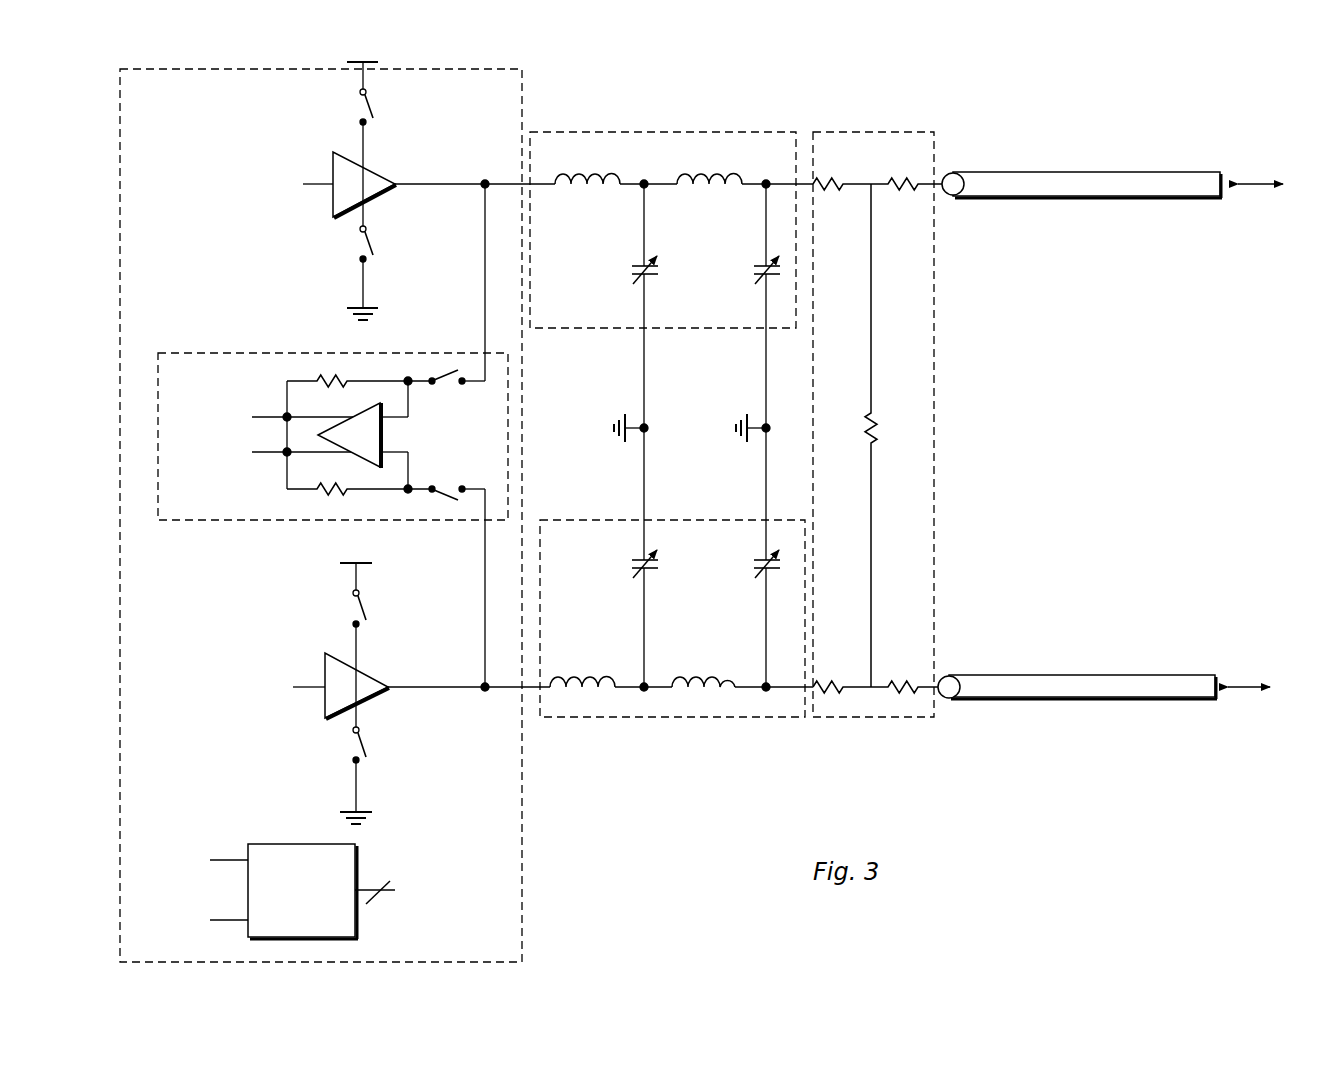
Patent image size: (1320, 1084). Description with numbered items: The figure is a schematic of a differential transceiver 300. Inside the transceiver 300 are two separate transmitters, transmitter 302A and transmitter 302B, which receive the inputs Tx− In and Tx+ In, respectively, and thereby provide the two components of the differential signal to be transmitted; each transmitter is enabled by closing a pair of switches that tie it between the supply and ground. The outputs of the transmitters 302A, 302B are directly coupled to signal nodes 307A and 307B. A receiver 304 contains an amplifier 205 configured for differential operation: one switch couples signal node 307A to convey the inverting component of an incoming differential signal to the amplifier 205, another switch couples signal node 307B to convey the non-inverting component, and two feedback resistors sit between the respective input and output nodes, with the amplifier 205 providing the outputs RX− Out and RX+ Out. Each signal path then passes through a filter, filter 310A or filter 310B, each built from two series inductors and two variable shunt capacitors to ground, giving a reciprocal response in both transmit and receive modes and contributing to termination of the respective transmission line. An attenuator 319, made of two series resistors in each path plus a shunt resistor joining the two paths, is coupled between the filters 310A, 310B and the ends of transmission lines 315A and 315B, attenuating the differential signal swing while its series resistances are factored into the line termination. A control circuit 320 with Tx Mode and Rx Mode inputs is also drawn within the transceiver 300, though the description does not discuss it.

The transceiver 300 is at (250, 95).
The transmitter 302A is at (331, 149).
The transmitter 302B is at (323, 651).
The signal node 307A is at (486, 177).
The signal node 307B is at (487, 700).
The receiver 304 is at (268, 513).
The amplifier 205 is at (496, 448).
The filter 310A is at (628, 320).
The filter 310B is at (635, 640).
The attenuator 319 is at (856, 131).
The transmission line 315A is at (1240, 155).
The transmission line 315B is at (1240, 661).
The control circuit 320 is at (315, 923).